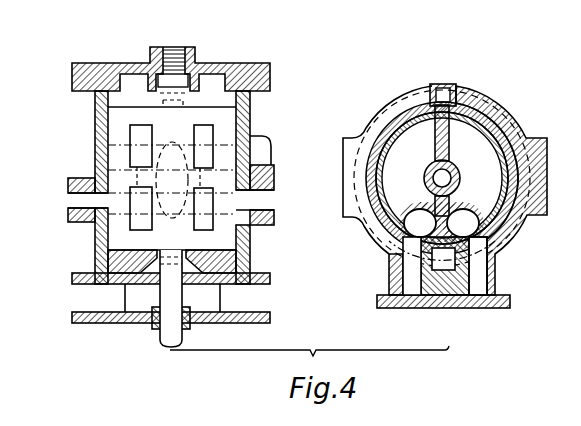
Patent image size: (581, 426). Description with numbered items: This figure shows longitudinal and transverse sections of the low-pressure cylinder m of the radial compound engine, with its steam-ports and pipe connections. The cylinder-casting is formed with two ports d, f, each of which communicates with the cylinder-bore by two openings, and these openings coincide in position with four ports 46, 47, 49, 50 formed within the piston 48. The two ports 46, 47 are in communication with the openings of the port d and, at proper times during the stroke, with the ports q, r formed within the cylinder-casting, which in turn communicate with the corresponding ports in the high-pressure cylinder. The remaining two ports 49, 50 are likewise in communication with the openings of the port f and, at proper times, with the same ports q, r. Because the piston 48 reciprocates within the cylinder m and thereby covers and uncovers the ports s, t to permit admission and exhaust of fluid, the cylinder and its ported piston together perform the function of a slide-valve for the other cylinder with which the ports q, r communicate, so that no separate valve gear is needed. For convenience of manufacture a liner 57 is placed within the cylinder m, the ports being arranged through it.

The port 46 is at (142, 230).
The port 47 is at (336, 175).
The piston 48 is at (319, 176).
The port 49 is at (276, 175).
The port 50 is at (200, 230).
The liner 57 is at (252, 100).
The cylinder m is at (95, 103).
The port t is at (190, 84).
The port d is at (68, 200).
The port f is at (95, 158).
The port s is at (174, 268).
The port r is at (412, 302).
The port q is at (475, 302).